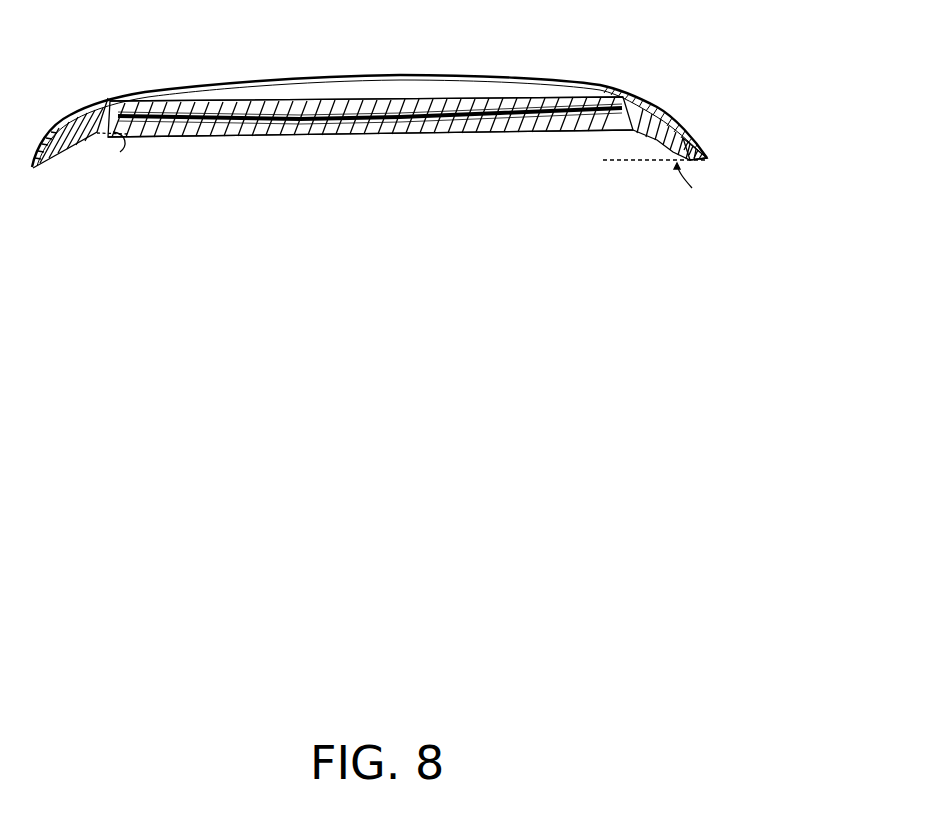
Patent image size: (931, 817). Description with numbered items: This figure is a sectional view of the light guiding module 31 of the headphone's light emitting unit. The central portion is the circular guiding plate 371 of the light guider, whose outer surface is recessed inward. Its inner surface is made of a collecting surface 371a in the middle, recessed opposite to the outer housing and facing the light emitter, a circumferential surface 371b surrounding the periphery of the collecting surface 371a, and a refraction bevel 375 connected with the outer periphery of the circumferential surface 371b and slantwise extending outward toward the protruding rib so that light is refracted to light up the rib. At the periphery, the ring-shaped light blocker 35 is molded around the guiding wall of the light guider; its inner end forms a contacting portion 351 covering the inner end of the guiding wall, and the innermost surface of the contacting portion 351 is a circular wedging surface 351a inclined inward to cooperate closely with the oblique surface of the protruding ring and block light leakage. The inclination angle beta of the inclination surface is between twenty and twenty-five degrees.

The light guiding module 31 is at (394, 67).
The light blocker 35 is at (660, 104).
The contacting portion 351 is at (707, 154).
The wedging surface 351a is at (709, 159).
The guiding plate 371 is at (377, 195).
The collecting surface 371a is at (376, 137).
The circumferential surface 371b is at (177, 139).
The refraction bevel 375 is at (105, 133).